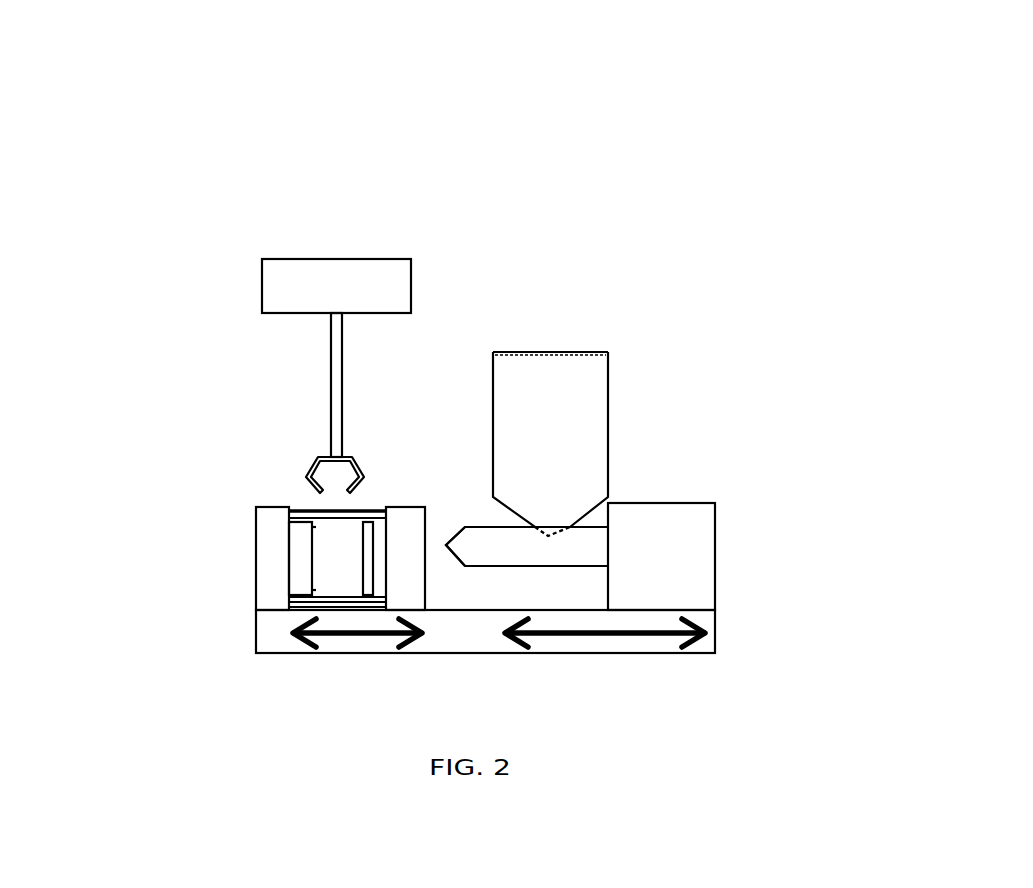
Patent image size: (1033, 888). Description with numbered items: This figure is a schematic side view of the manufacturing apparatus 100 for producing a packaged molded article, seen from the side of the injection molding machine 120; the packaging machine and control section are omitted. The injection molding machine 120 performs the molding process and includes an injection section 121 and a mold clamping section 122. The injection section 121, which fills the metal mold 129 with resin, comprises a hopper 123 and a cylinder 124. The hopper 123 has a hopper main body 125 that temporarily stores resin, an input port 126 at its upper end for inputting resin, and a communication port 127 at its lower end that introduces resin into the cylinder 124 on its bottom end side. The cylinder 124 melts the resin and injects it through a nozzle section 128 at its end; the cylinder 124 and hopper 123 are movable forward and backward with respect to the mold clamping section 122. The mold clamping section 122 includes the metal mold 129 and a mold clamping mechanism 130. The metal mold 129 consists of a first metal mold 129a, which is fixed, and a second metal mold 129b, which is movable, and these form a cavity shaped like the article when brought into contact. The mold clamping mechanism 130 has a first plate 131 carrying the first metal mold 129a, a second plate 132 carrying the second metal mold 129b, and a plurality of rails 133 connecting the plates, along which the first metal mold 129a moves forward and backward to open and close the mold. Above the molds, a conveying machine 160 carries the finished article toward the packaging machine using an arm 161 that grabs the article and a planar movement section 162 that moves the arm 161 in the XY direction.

The manufacturing apparatus 100 is at (505, 72).
The injection molding machine 120 is at (632, 228).
The injection section 121 is at (752, 337).
The mold clamping section 122 is at (143, 491).
The hopper 123 is at (694, 375).
The cylinder 124 is at (497, 540).
The hopper main body 125 is at (608, 463).
The input port 126 is at (565, 353).
The communication port 127 is at (547, 536).
The nozzle section 128 is at (448, 543).
The metal mold 129 is at (170, 553).
The first metal mold 129a is at (373, 555).
The second metal mold 129b is at (297, 536).
The mold clamping mechanism 130 is at (170, 660).
The first plate 131 is at (402, 605).
The second plate 132 is at (279, 597).
The rails 133 is at (296, 513).
The conveying machine 160 is at (333, 228).
The arm 161 is at (342, 378).
The planar movement section 162 is at (411, 288).